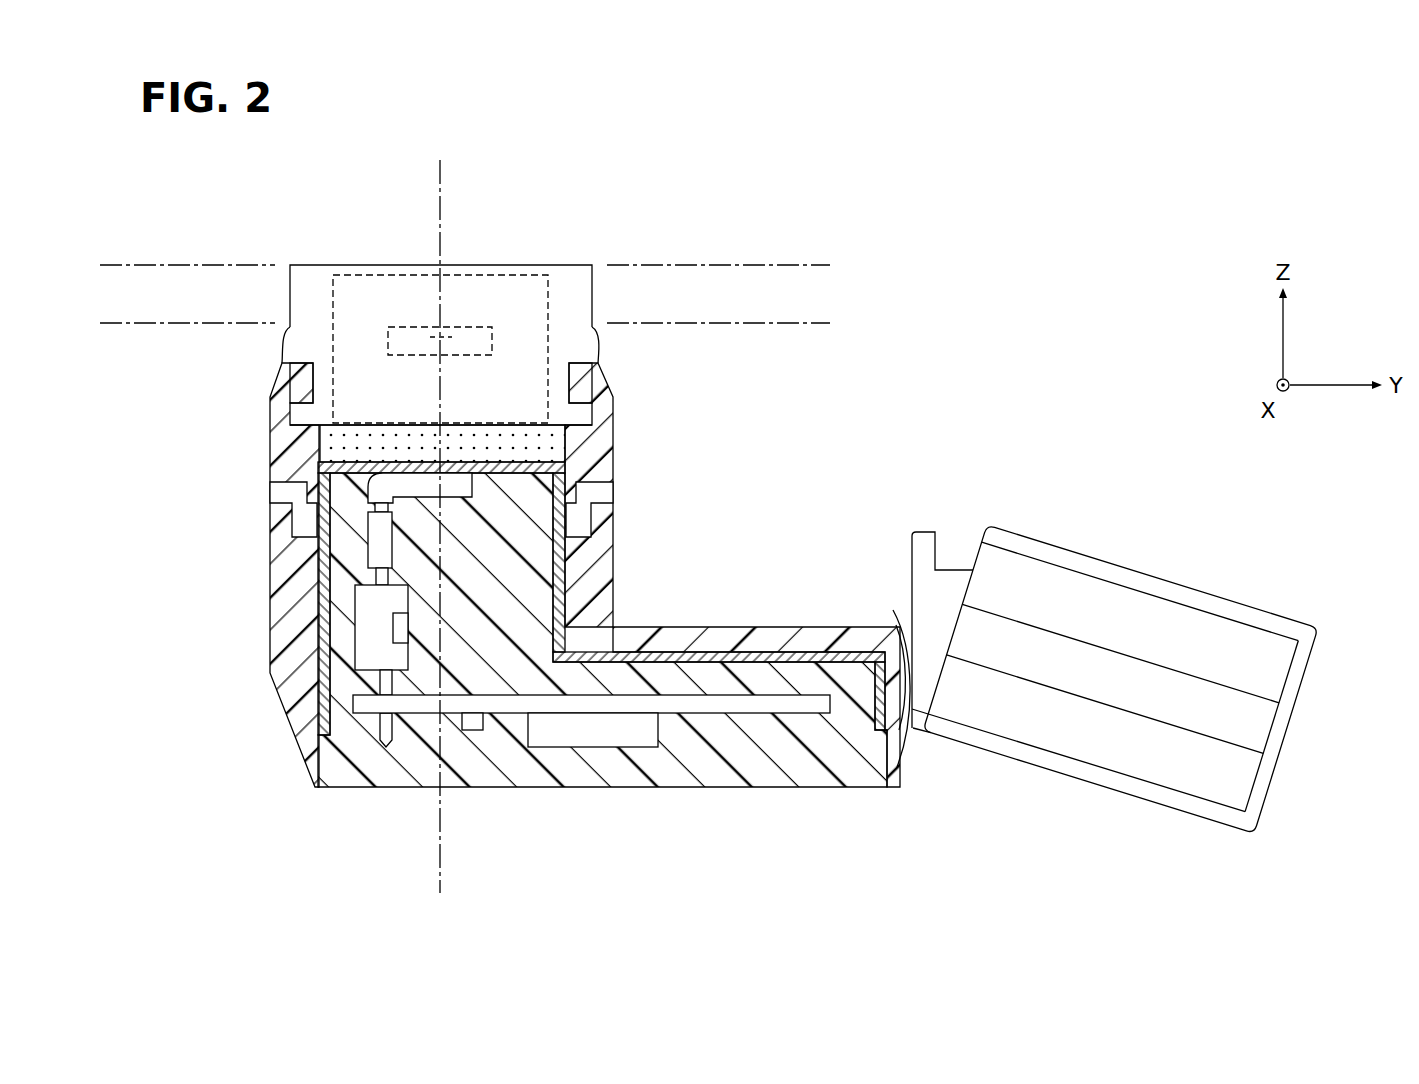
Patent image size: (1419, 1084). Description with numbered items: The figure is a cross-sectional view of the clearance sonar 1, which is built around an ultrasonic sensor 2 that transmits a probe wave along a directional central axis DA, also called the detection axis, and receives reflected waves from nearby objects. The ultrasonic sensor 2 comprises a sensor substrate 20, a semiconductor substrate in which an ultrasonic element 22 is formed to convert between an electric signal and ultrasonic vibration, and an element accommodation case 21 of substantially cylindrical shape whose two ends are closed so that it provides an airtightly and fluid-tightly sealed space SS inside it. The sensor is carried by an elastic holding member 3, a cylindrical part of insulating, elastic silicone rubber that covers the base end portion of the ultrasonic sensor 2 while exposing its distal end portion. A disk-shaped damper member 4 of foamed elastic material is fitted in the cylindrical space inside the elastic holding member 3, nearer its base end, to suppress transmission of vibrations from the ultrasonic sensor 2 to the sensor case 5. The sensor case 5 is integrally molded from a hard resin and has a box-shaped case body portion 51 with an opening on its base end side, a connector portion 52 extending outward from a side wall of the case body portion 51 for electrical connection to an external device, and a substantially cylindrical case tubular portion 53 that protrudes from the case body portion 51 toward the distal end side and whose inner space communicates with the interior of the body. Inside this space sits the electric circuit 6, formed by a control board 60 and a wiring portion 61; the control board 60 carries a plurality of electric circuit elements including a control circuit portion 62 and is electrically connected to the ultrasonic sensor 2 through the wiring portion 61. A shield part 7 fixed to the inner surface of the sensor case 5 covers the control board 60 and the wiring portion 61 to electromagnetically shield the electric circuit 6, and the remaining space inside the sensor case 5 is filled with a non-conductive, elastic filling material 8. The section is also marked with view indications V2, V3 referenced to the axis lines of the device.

The clearance sonar 1 is at (1106, 288).
The ultrasonic sensor 2 is at (459, 306).
The sensor substrate 20 is at (405, 345).
The element accommodation case 21 is at (548, 275).
The ultrasonic element 22 is at (445, 335).
The sealed space SS is at (517, 295).
The elastic holding member 3 is at (603, 382).
The damper member 4 is at (563, 440).
The sensor case 5 is at (737, 575).
The case body portion 51 is at (831, 637).
The connector portion 52 is at (1153, 585).
The case tubular portion 53 is at (603, 538).
The electric circuit 6 is at (352, 744).
The wiring portion 61 is at (363, 607).
The control circuit portion 62 is at (617, 735).
The shield part 7 is at (727, 655).
The filling material 8 is at (769, 767).
The control board 60 is at (816, 703).
The directional central axis DA is at (440, 880).
The view direction V2 is at (808, 268).
The view direction V3 is at (808, 268).